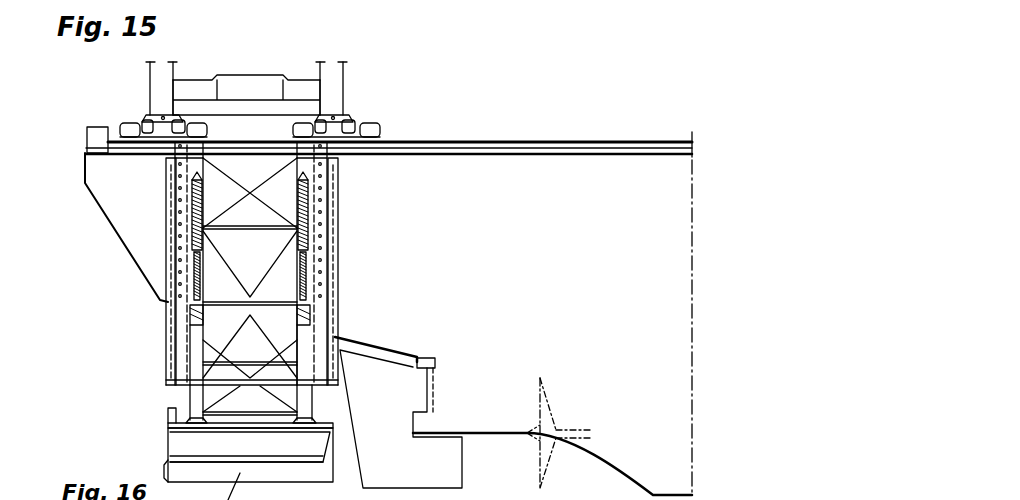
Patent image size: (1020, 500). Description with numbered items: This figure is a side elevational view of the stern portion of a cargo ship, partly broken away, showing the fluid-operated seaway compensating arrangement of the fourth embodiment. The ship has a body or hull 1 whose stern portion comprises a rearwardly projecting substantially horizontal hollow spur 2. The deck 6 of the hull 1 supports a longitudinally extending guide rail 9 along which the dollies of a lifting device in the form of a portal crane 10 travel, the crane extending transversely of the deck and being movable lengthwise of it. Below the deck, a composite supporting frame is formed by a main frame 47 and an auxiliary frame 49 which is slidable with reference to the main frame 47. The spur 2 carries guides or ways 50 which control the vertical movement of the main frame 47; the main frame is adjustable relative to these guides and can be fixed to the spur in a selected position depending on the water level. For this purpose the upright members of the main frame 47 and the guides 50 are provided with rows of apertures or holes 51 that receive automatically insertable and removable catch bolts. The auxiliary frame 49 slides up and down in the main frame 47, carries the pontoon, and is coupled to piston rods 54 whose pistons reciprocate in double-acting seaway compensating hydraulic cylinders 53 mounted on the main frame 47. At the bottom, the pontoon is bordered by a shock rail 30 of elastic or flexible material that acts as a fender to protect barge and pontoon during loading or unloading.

The hull 1 is at (553, 327).
The spur 2 is at (107, 196).
The deck 6 is at (627, 157).
The guide rail 9 is at (515, 140).
The portal crane 10 is at (240, 82).
The shock rail 30 is at (225, 423).
The main frame 47 is at (320, 287).
The auxiliary frame 49 is at (190, 397).
The guide 50 is at (164, 203).
The aperture 51 is at (180, 280).
The seaway compensating hydraulic cylinder 53 is at (197, 225).
The piston rod 54 is at (197, 290).